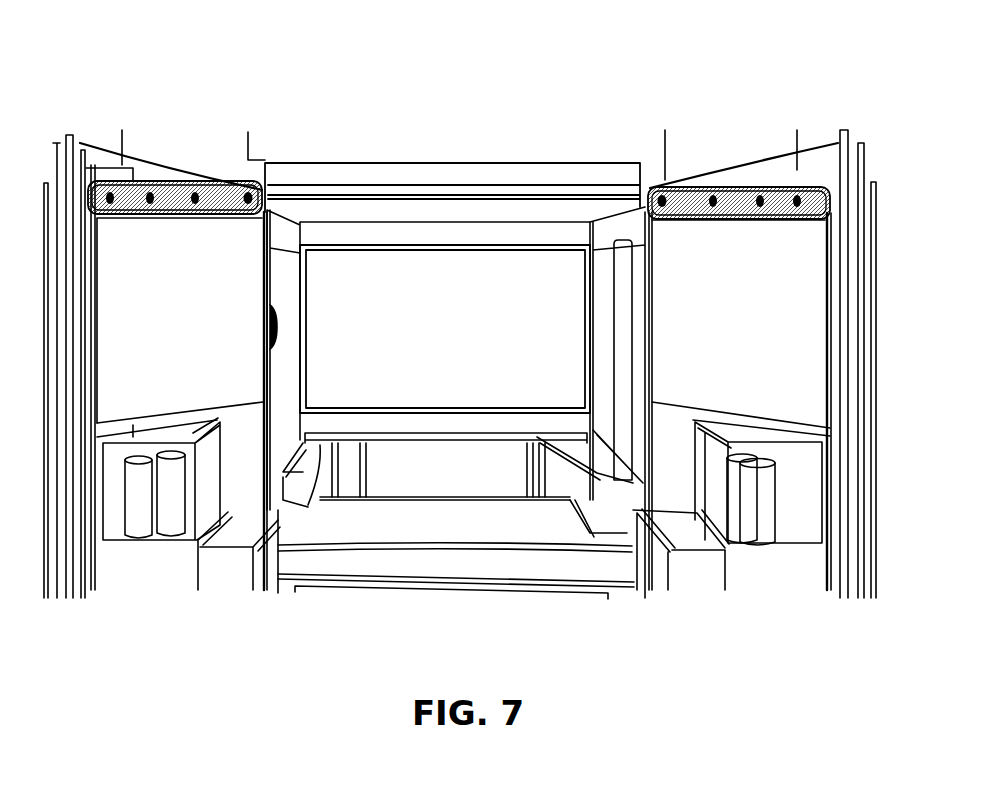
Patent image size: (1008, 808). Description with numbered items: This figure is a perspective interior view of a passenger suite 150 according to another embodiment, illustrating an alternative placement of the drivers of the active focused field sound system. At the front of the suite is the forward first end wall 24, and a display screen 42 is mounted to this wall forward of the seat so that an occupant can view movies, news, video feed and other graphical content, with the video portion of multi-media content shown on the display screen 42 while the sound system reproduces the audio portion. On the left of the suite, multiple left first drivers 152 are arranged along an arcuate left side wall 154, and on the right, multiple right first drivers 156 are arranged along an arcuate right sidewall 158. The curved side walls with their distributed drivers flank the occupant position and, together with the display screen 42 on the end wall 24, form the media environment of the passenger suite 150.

The passenger suite 150 is at (455, 125).
The forward first end wall 24 is at (382, 163).
The display screen 42 is at (449, 337).
The left first drivers 152 is at (108, 192).
The arcuate left side wall 154 is at (158, 327).
The right first drivers 156 is at (666, 196).
The arcuate right sidewall 158 is at (762, 300).